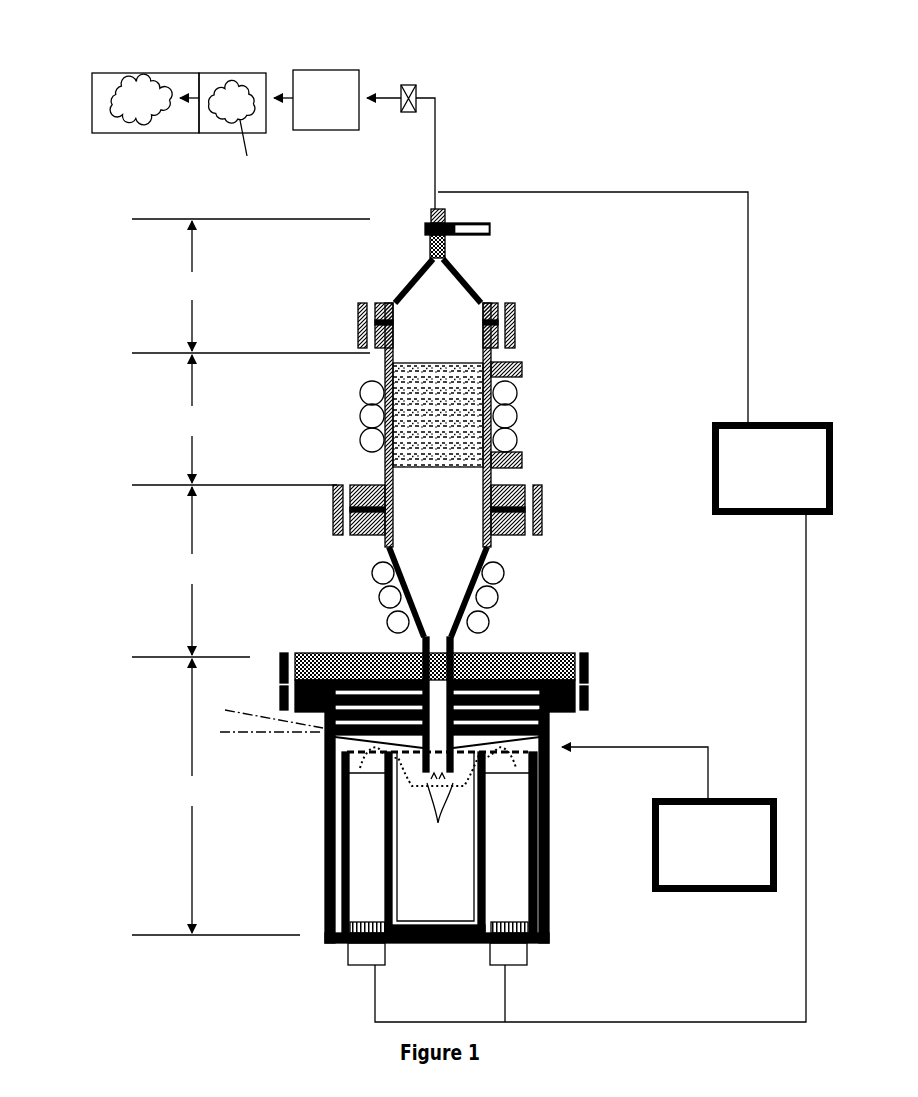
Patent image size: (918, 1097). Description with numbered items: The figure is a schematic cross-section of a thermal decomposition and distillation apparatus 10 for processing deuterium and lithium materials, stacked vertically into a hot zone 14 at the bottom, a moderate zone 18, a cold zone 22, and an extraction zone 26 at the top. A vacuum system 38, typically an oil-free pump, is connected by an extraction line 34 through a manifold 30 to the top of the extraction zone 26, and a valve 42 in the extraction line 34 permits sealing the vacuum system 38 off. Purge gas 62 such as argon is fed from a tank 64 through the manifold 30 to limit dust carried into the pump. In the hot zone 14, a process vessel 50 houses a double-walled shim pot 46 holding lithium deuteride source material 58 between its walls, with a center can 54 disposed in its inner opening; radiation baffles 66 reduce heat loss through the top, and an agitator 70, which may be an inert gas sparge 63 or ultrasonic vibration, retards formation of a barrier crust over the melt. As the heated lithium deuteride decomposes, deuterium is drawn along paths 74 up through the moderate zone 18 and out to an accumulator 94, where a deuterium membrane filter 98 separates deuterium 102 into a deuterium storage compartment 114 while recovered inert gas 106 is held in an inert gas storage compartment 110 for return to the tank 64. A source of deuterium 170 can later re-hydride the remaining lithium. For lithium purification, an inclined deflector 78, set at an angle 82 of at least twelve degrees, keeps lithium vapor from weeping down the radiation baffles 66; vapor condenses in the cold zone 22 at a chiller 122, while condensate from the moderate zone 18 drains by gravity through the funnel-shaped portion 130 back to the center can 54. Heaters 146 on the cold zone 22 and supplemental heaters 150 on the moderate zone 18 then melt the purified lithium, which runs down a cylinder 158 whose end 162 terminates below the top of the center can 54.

The thermal decomposition and distillation apparatus 10 is at (586, 80).
The hot zone 14 is at (216, 797).
The moderate zone 18 is at (191, 572).
The cold zone 22 is at (234, 420).
The extraction zone 26 is at (251, 286).
The manifold 30 is at (425, 228).
The extraction line 34 is at (436, 172).
The vacuum system 38 is at (330, 70).
The valve 42 is at (410, 85).
The shim pot 46 is at (431, 790).
The process vessel 50 is at (553, 900).
The center can 54 is at (393, 883).
The lithium deuteride source material 58 is at (439, 842).
The purge gas 62 is at (773, 469).
The inert gas sparge 63 is at (773, 469).
The tank 64 is at (602, 607).
The radiation baffles 66 is at (536, 696).
The agitator 70 is at (365, 965).
The paths 74 is at (435, 813).
The inclined deflector 78 is at (375, 728).
The angle 82 is at (240, 718).
The accumulator 94 is at (158, 112).
The deuterium membrane filter 98 is at (213, 90).
The deuterium 102 is at (140, 76).
The recovered inert gas 106 is at (269, 155).
The inert gas storage compartment 110 is at (227, 114).
The deuterium storage compartment 114 is at (114, 90).
The chiller 122 is at (473, 363).
The funnel-shaped portion 130 is at (407, 590).
The heaters 146 is at (360, 445).
The supplemental heaters 150 is at (372, 573).
The cylinder 158 is at (459, 686).
The end 162 is at (412, 764).
The source of deuterium 170 is at (668, 818).